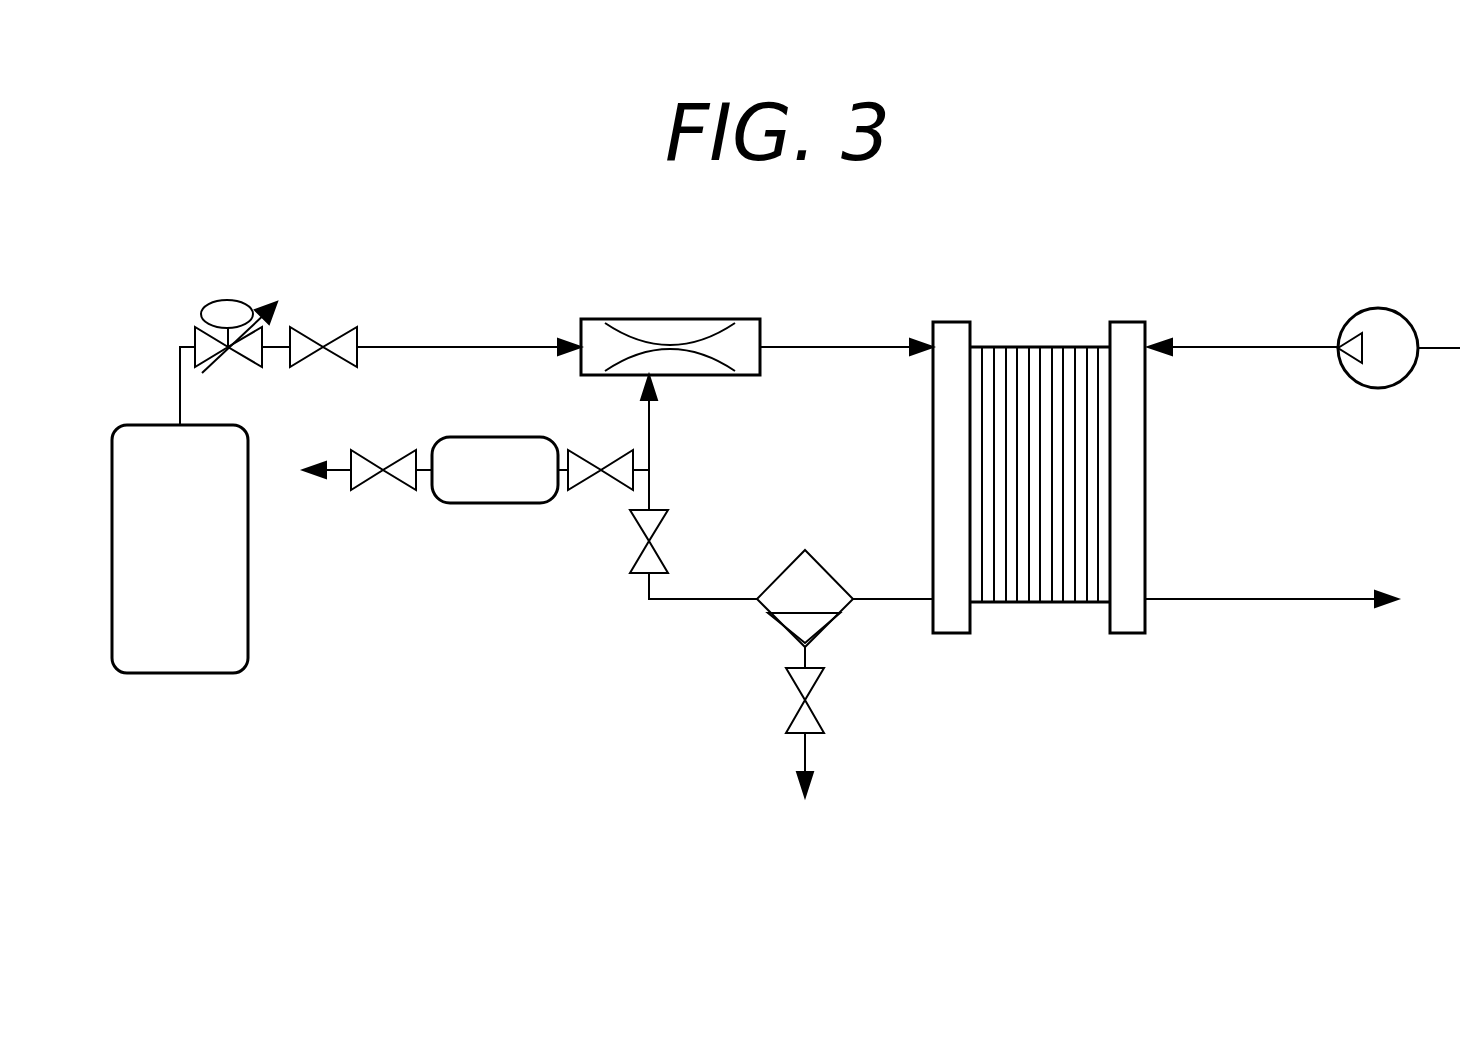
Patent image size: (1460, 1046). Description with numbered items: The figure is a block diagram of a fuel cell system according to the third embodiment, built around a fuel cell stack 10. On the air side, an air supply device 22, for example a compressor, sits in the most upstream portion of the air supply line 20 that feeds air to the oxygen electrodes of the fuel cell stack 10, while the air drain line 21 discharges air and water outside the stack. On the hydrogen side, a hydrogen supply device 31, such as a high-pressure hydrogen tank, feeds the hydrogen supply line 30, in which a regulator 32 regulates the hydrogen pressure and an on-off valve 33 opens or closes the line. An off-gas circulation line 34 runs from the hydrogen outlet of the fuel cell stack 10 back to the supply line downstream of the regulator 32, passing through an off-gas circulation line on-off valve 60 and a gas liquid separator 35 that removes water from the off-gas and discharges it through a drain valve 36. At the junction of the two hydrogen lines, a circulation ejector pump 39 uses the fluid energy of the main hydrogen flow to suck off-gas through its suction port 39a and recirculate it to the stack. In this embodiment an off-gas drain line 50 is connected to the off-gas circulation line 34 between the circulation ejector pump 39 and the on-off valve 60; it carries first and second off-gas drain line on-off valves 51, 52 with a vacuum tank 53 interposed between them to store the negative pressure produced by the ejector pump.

The fuel cell stack 10 is at (1032, 604).
The air supply line 20 is at (1230, 350).
The air drain line 21 is at (1295, 602).
The air supply device 22 is at (1380, 388).
The hydrogen supply line 30 is at (178, 390).
The hydrogen supply device 31 is at (188, 675).
The regulator 32 is at (225, 300).
The on-off valve 33 is at (325, 345).
The off-gas circulation line 34 is at (649, 435).
The gas liquid separator 35 is at (817, 560).
The drain valve 36 is at (823, 700).
The circulation ejector pump 39 is at (717, 319).
The suction port 39a is at (655, 377).
The off-gas drain line 50 is at (335, 472).
The first off-gas drain line on-off valve 51 is at (597, 488).
The second off-gas drain line on-off valve 52 is at (378, 488).
The vacuum tank 53 is at (485, 503).
The off-gas circulation line on-off valve 60 is at (643, 542).